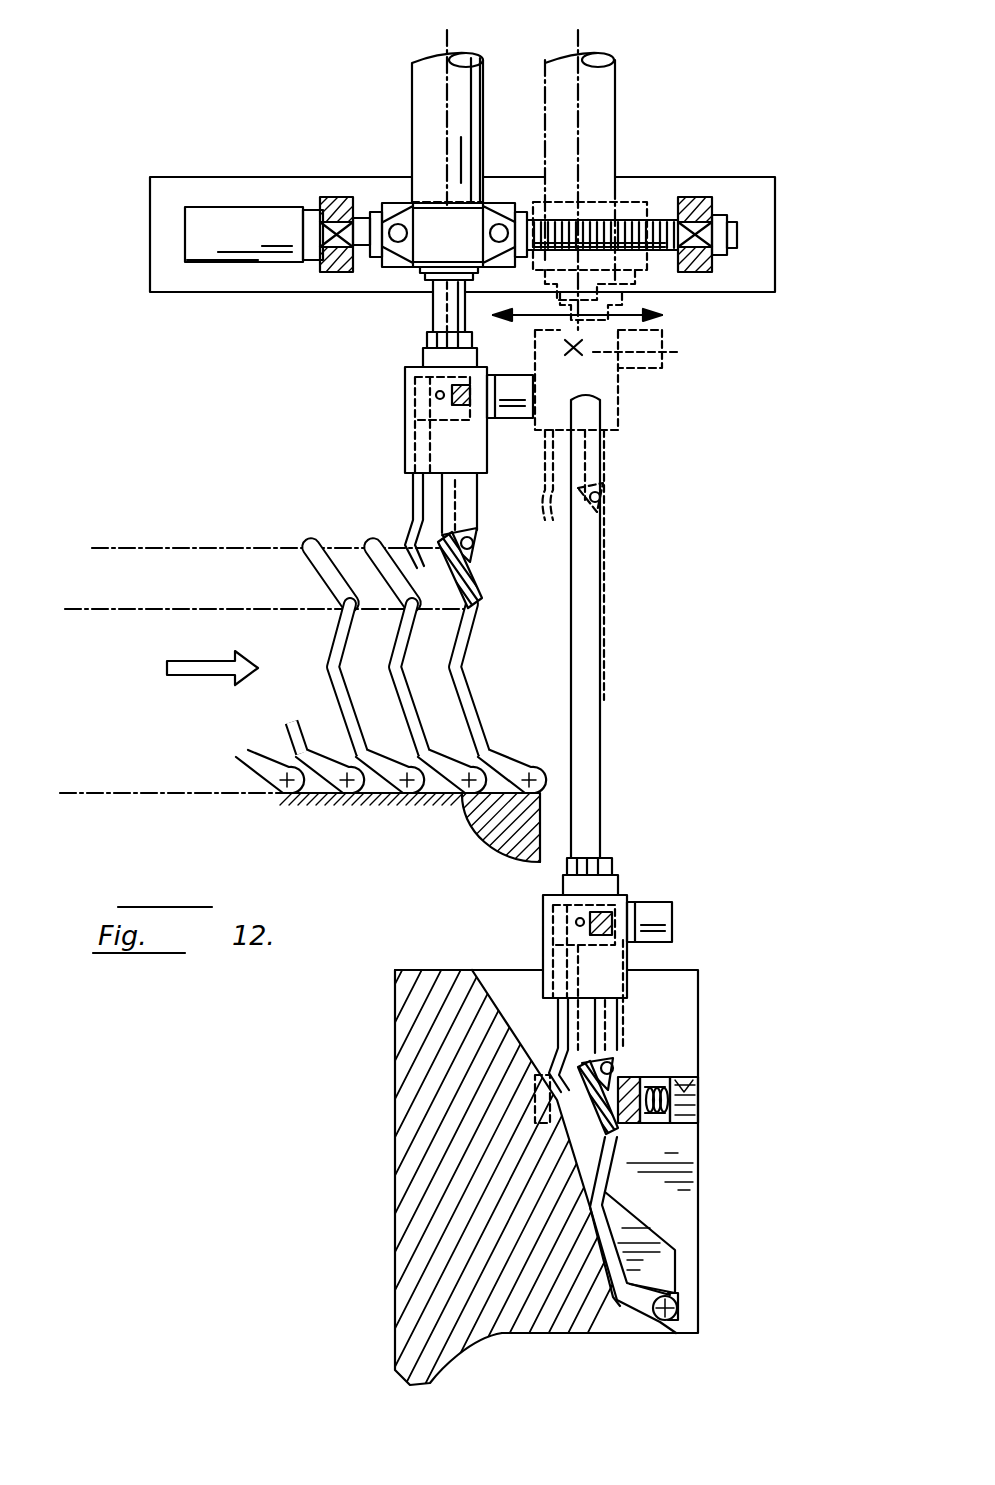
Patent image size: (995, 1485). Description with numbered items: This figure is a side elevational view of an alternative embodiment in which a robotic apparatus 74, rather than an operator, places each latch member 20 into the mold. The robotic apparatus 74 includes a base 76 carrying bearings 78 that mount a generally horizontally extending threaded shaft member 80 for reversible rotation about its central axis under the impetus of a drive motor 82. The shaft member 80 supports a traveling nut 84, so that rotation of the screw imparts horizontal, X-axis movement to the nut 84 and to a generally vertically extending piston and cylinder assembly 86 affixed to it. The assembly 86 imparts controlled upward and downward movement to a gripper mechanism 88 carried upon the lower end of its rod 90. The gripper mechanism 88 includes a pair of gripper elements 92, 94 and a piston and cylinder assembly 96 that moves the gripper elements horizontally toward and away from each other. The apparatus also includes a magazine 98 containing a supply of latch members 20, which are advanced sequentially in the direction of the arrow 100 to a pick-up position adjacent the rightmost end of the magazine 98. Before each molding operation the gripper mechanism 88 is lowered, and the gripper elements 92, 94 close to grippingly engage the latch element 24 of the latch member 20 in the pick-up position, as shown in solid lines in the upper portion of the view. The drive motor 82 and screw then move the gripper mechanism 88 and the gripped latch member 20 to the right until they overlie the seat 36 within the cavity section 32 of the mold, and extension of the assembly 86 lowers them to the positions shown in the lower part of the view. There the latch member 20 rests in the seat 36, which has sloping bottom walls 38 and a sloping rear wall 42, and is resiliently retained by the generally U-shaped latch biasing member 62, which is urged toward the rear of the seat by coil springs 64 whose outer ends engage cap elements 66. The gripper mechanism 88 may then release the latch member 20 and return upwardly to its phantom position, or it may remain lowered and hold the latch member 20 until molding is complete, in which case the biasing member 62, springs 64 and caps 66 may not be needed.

The latch member 20 is at (326, 691).
The latch element 24 is at (485, 585).
The cavity section 32 is at (388, 1036).
The seat 36 is at (522, 962).
The sloping bottom walls 38 is at (668, 1295).
The sloping rear wall 42 is at (610, 1238).
The latch biasing member 62 is at (640, 1077).
The coil springs 64 is at (660, 1080).
The cap elements 66 is at (698, 1087).
The robotic apparatus 74 is at (388, 97).
The base 76 is at (165, 180).
The bearings 78 is at (335, 197).
The threaded shaft member 80 is at (648, 225).
The drive motor 82 is at (222, 262).
The traveling nut 84 is at (382, 292).
The piston and cylinder assembly 86 is at (552, 115).
The gripper mechanism 88 is at (392, 437).
The rod 90 is at (433, 314).
The gripper element 92 is at (415, 500).
The gripper element 94 is at (485, 520).
The piston and cylinder assembly 96 is at (535, 392).
The magazine 98 is at (432, 838).
The arrow 100 is at (185, 675).